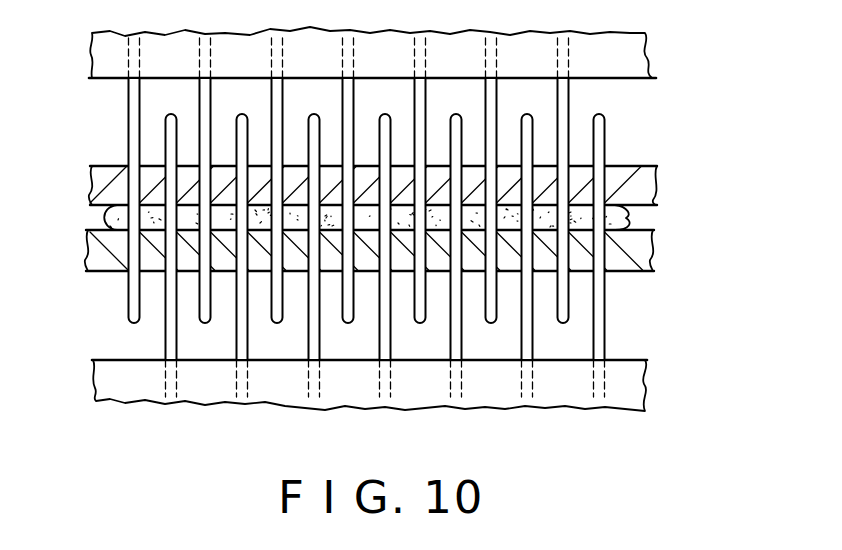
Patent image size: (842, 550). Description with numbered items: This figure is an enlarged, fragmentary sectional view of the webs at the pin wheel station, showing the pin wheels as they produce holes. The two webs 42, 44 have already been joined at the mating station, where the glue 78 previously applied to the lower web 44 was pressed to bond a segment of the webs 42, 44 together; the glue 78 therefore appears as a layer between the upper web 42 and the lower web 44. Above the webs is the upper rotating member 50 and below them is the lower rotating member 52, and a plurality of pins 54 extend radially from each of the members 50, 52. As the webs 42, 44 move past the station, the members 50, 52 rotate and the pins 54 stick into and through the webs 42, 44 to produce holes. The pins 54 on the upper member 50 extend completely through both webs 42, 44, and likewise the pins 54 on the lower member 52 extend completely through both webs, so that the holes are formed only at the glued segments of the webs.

The upper rotating member 50 is at (628, 55).
The lower rotating member 52 is at (630, 385).
The web 42 is at (635, 186).
The lower web 44 is at (637, 250).
The glue 78 is at (627, 228).
The pins 54 is at (606, 135).